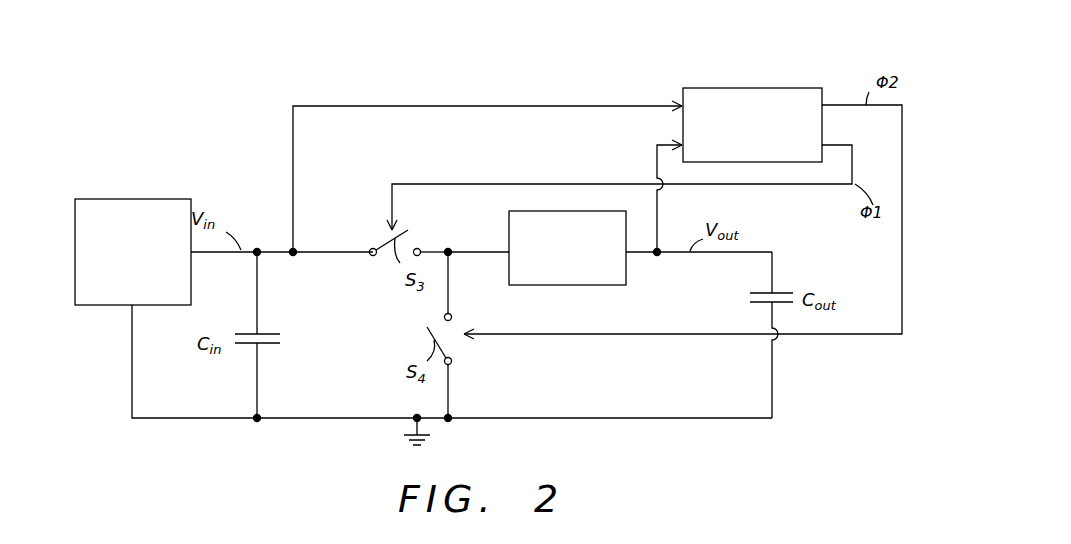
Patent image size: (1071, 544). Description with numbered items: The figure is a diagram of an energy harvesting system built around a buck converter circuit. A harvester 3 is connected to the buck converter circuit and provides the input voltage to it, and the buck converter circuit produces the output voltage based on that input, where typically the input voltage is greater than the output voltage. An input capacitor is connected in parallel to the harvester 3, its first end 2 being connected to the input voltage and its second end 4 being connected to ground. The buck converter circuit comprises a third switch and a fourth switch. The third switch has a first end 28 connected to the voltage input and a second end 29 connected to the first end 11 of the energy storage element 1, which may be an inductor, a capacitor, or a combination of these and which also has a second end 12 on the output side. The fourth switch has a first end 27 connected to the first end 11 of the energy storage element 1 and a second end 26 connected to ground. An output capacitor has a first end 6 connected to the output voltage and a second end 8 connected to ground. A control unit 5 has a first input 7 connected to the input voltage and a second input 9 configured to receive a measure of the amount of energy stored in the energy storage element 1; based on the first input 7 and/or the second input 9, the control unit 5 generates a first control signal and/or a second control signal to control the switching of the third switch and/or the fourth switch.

The energy storage element 1 is at (543, 211).
The first end of capacitor Cin 2 is at (257, 294).
The harvester 3 is at (115, 199).
The second end of capacitor Cin 4 is at (257, 374).
The control unit 5 is at (723, 88).
The first end of capacitor Cout 6 is at (772, 276).
The first input of control unit 7 is at (328, 106).
The second end of capacitor Cout 8 is at (772, 375).
The second input of control unit 9 is at (657, 160).
The first end of energy storage element 11 is at (467, 251).
The second end of energy storage element 12 is at (634, 253).
The second end of switch S4 26 is at (448, 376).
The first end of switch S4 27 is at (448, 283).
The first end of switch S3 28 is at (340, 251).
The second end of switch S3 29 is at (432, 251).